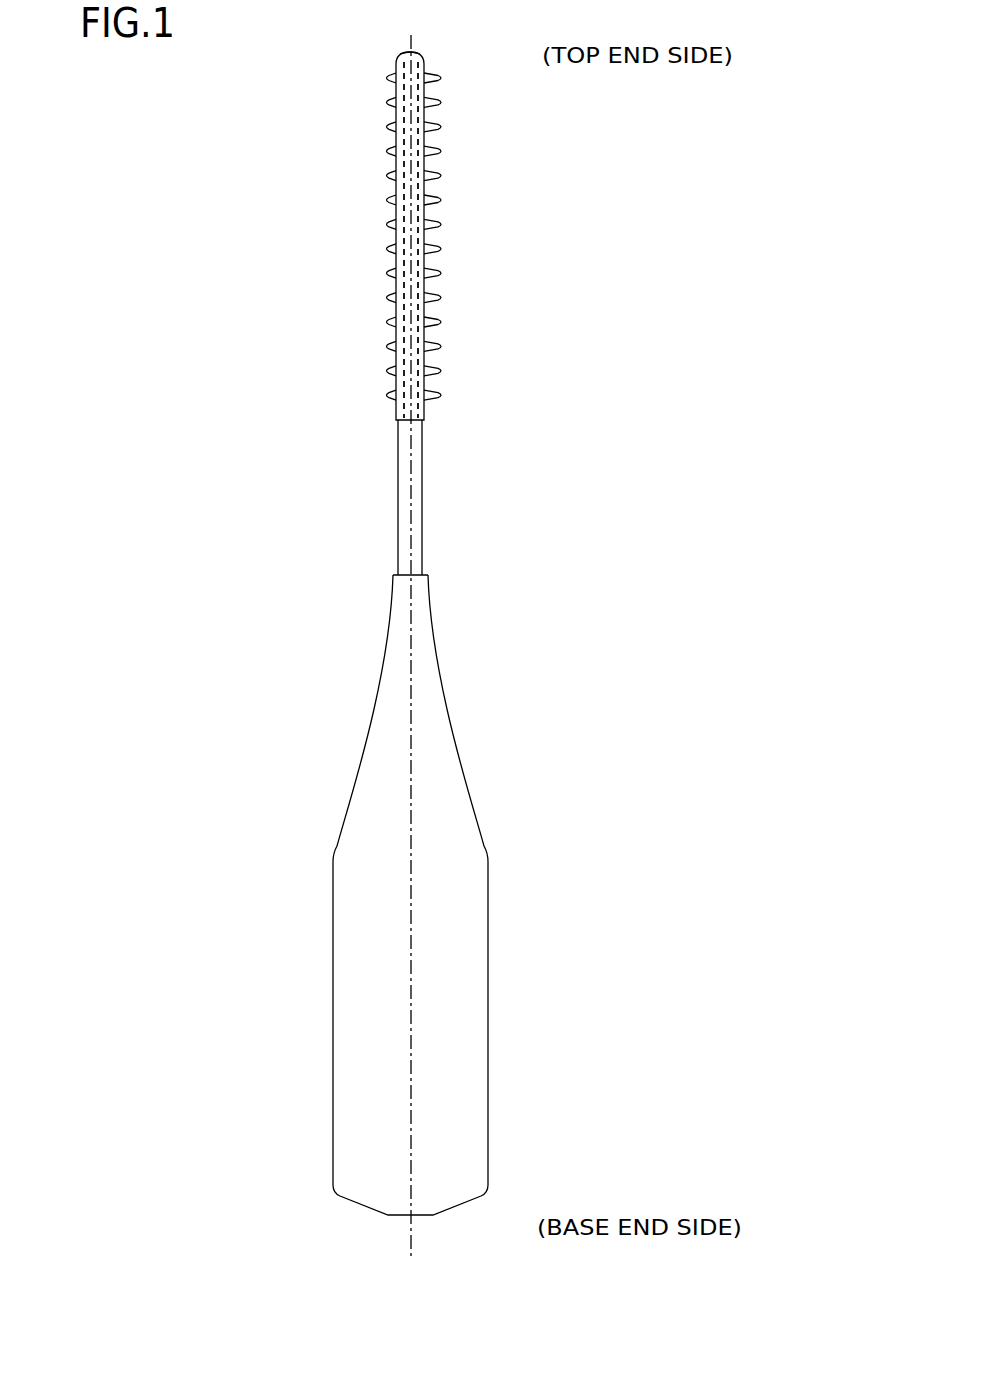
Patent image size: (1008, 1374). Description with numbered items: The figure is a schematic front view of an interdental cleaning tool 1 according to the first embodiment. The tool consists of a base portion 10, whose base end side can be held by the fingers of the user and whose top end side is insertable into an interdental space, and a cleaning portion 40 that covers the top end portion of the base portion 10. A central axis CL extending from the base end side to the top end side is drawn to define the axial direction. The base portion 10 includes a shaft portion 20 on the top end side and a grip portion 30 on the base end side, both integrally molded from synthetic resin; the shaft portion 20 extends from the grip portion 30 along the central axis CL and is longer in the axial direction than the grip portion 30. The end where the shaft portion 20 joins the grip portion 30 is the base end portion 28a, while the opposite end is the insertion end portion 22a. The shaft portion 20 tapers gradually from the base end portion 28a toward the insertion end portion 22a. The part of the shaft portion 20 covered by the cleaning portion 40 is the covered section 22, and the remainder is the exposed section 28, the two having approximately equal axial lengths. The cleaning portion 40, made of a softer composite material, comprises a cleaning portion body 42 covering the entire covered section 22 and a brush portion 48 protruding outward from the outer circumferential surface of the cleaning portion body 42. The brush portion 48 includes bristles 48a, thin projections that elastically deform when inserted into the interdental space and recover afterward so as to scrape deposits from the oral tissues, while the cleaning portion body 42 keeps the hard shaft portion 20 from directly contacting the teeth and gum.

The interdental cleaning tool 1 is at (305, 148).
The base portion 10 is at (587, 370).
The shaft portion 20 is at (530, 320).
The covered section 22 is at (425, 333).
The insertion end portion 22a is at (414, 52).
The exposed section 28 is at (423, 430).
The base end portion 28a is at (398, 574).
The grip portion 30 is at (465, 788).
The cleaning portion 40 is at (530, 138).
The cleaning portion body 42 is at (426, 205).
The brush portion 48 is at (428, 150).
The bristles 48a is at (386, 249).
The central axis CL is at (412, 1230).